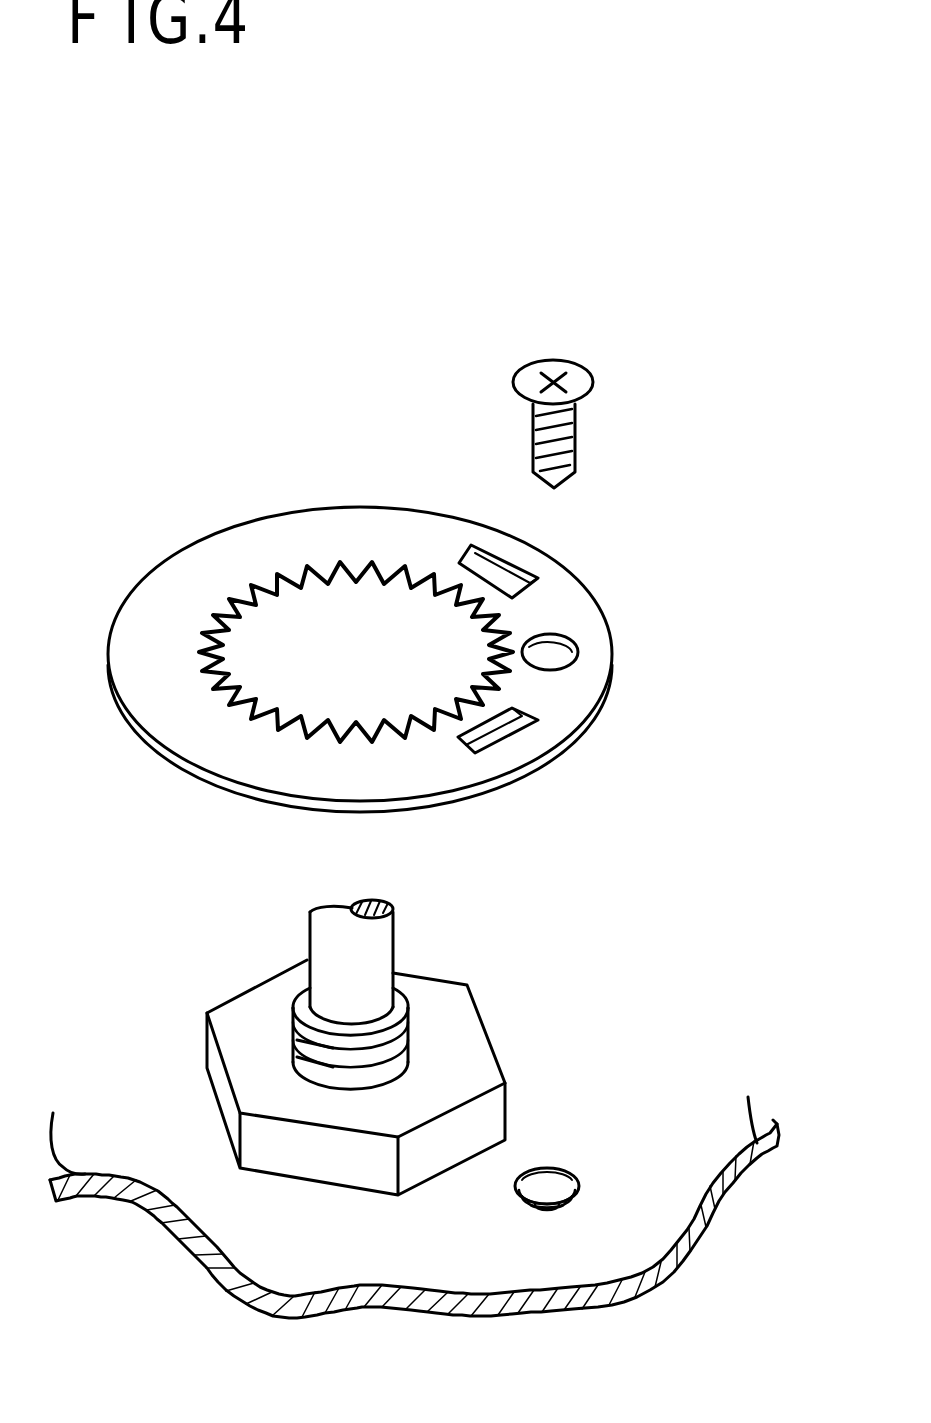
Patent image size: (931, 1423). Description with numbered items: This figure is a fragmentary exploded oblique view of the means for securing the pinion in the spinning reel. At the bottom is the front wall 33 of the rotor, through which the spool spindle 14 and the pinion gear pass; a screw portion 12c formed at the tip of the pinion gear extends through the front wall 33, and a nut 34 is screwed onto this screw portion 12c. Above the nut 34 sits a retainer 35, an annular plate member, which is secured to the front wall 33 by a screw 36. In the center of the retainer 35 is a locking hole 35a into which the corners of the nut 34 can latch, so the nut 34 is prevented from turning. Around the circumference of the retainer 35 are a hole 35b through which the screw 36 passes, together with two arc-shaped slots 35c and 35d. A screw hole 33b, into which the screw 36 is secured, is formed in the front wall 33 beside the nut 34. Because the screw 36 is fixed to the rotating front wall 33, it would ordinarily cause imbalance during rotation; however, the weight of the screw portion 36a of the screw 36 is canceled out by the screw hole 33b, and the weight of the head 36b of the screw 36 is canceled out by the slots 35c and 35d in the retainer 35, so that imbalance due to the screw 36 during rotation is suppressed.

The screw portion 12c is at (293, 1030).
The spool spindle 14 is at (377, 938).
The front wall 33 is at (408, 1200).
The screw hole 33b is at (563, 1170).
The nut 34 is at (470, 1045).
The retainer 35 is at (464, 584).
The locking hole 35a is at (407, 572).
The hole 35b is at (585, 638).
The arc-shaped slot 35c is at (540, 578).
The arc-shaped slot 35d is at (520, 737).
The screw 36 is at (585, 367).
The screw portion 36a is at (575, 433).
The head 36b is at (530, 372).